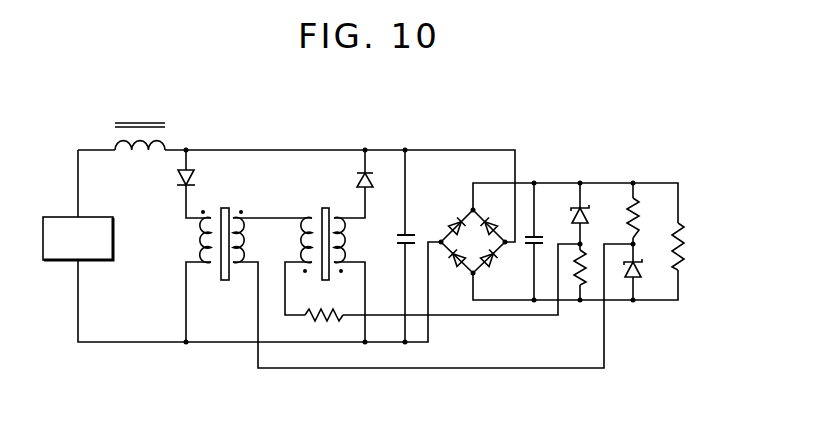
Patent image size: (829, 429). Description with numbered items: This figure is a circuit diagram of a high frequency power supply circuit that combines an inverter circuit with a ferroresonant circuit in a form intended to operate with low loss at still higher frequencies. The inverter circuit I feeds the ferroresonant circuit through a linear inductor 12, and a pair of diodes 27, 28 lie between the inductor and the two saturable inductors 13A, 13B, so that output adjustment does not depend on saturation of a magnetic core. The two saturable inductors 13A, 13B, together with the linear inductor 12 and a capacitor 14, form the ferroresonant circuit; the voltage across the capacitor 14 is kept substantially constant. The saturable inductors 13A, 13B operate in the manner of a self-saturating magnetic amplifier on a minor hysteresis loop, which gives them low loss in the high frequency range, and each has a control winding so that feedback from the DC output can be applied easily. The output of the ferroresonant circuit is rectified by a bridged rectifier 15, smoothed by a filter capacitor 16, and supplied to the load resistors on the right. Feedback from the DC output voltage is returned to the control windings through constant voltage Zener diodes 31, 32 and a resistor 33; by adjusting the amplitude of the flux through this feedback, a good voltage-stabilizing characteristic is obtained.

The inverter circuit I is at (57, 262).
The linear inductor 12 is at (168, 132).
The diode 27 is at (198, 177).
The diode 28 is at (355, 178).
The saturable inductor 13A is at (223, 283).
The saturable inductor 13B is at (295, 305).
The resistor 33 is at (330, 327).
The capacitor 14 is at (419, 232).
The bridged rectifier 15 is at (449, 268).
The filter capacitor 16 is at (544, 232).
The constant voltage (Zener) diode 31 is at (588, 205).
The constant voltage (Zener) diode 32 is at (640, 279).